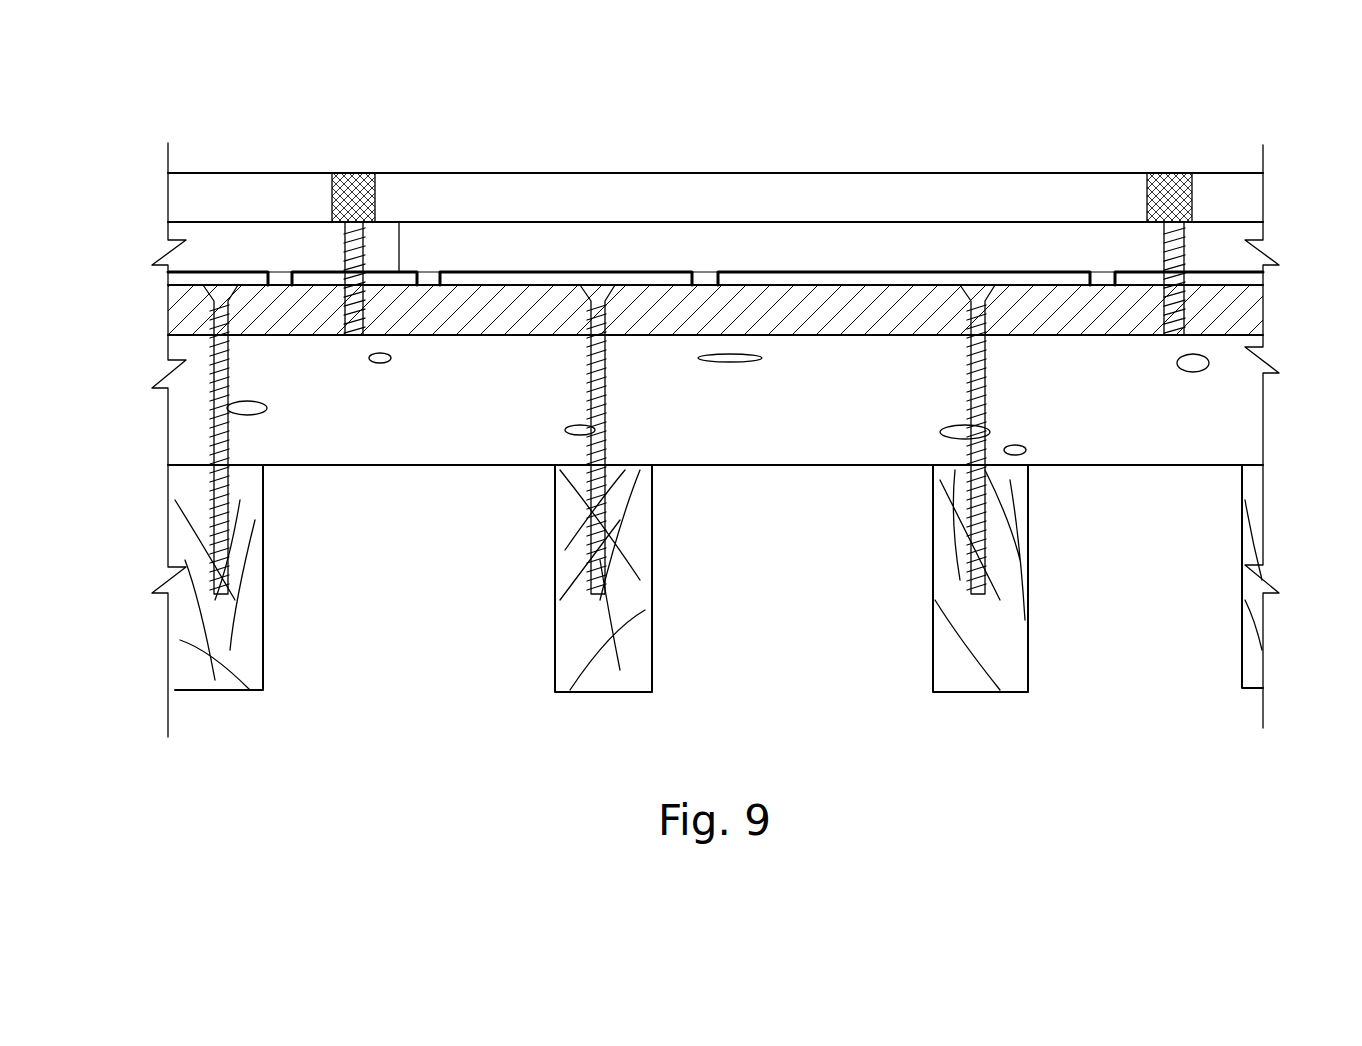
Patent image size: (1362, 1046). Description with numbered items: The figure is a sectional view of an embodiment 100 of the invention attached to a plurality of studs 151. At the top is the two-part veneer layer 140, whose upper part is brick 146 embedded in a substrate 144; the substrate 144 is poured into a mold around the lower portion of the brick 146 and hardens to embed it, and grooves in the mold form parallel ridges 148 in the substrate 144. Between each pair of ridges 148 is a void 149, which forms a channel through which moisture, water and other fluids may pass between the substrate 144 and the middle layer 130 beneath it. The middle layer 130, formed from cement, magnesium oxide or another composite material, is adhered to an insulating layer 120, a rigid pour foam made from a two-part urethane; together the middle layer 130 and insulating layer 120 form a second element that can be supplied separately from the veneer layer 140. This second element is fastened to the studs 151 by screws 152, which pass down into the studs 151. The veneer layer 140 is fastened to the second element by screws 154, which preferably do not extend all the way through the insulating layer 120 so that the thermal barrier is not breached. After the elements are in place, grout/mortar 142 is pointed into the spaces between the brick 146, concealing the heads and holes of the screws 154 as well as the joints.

The embodiment 100 is at (918, 110).
The insulating layer 120 is at (1240, 347).
The middle layer 130 is at (1240, 308).
The two-part veneer layer 140 is at (150, 343).
The grout/mortar 142 is at (357, 173).
The substrate 144 is at (1223, 265).
The brick 146 is at (1122, 193).
The ridges 148 is at (279, 278).
The void 149 is at (210, 280).
The studs 151 is at (252, 662).
The screws 152 is at (210, 483).
The screws 154 is at (365, 290).